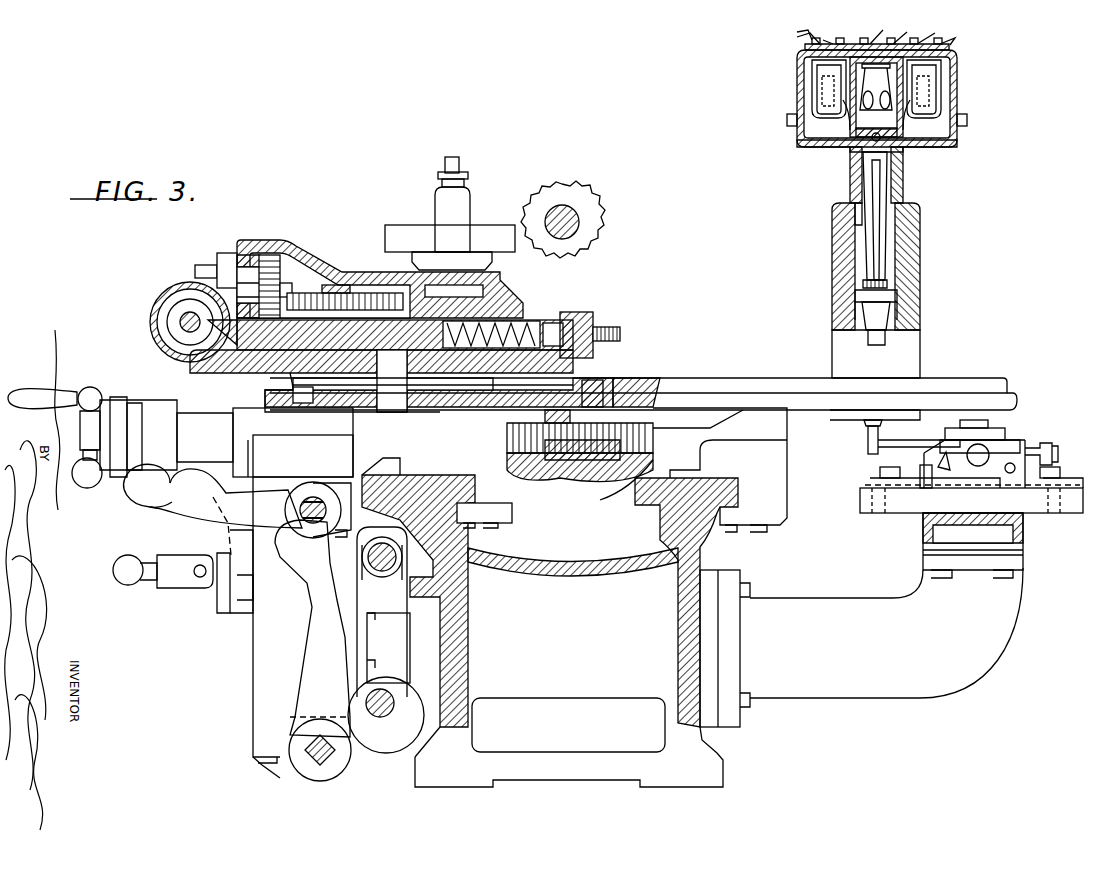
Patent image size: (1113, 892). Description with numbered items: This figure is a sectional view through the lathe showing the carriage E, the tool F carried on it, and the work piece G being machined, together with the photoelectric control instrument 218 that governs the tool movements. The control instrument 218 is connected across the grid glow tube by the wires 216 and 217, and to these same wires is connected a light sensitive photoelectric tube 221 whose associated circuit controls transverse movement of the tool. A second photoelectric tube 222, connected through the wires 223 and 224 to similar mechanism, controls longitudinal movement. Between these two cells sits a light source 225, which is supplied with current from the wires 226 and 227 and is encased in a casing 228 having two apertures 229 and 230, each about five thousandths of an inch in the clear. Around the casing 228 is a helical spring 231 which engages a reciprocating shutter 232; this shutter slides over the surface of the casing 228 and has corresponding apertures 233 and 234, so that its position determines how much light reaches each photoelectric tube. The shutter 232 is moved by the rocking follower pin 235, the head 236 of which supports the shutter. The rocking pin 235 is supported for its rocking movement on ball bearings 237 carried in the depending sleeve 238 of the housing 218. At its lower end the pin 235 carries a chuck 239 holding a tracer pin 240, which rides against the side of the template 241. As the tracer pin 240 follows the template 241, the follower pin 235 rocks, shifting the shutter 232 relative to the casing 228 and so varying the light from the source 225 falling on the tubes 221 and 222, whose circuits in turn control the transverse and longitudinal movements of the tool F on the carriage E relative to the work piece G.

The carriage E is at (337, 273).
The tool F is at (487, 237).
The work piece G is at (588, 222).
The wire 216 is at (797, 40).
The wire 217 is at (797, 32).
The control instrument 218 is at (797, 80).
The light sensitive photoelectric tube 221 is at (815, 97).
The photoelectric tube 222 is at (937, 100).
The wire 223 is at (935, 33).
The wire 224 is at (955, 40).
The light source 225 is at (853, 133).
The wire 226 is at (883, 36).
The wire 227 is at (905, 32).
The casing 228 is at (903, 170).
The aperture 229 is at (903, 150).
The aperture 230 is at (850, 130).
The helical spring 231 is at (933, 137).
The reciprocating shutter 232 is at (873, 135).
The aperture 233 is at (930, 150).
The aperture 234 is at (840, 133).
The rocking follower pin 235 is at (883, 190).
The head 236 is at (853, 167).
The ball bearings 237 is at (883, 293).
The depending sleeve 238 is at (850, 190).
The chuck 239 is at (867, 422).
The tracer pin 240 is at (867, 447).
The template 241 is at (900, 447).